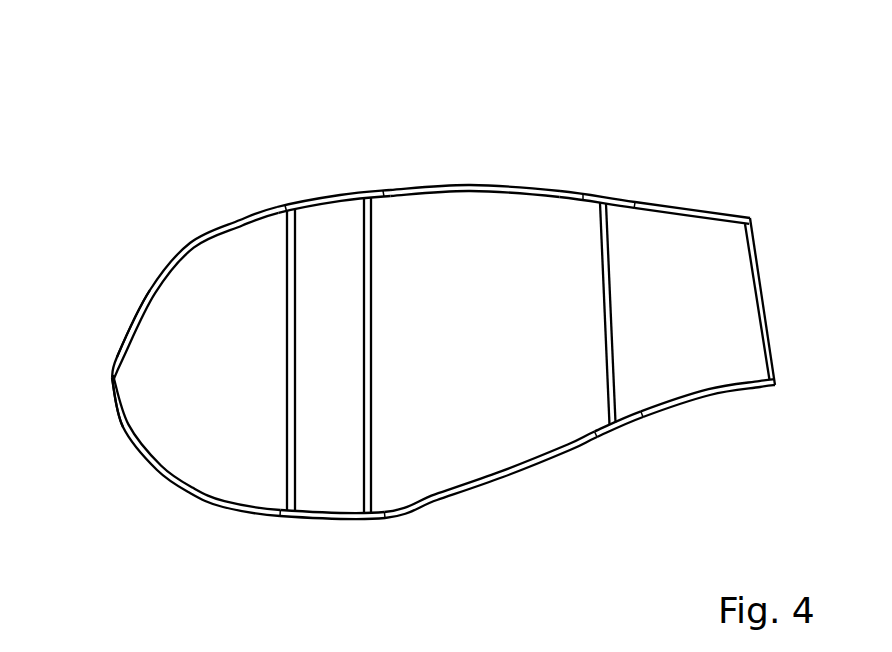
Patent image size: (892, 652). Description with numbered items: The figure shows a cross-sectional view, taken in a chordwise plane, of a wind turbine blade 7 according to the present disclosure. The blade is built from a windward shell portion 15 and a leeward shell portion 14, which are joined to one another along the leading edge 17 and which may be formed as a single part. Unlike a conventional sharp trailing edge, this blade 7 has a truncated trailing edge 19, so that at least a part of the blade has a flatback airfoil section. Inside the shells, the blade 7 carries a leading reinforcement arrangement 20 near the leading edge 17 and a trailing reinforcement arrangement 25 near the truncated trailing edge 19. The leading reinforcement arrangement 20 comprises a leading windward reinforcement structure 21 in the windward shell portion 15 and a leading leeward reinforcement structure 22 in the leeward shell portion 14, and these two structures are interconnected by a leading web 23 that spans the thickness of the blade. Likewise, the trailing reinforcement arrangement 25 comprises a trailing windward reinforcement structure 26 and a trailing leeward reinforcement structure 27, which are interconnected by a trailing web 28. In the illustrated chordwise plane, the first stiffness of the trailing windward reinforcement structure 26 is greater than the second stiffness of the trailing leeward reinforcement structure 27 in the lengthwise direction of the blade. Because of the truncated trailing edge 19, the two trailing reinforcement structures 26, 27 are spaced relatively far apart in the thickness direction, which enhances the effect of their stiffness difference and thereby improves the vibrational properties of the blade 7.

The wind turbine blade 7 is at (154, 220).
The leeward shell portion 14 is at (470, 188).
The windward shell portion 15 is at (517, 480).
The leading edge 17 is at (112, 378).
The truncated trailing edge 19 is at (763, 277).
The leading reinforcement arrangement 20 is at (270, 159).
The leading windward reinforcement structure 21 is at (335, 522).
The leading leeward reinforcement structure 22 is at (323, 195).
The leading web 23 is at (295, 365).
The trailing reinforcement arrangement 25 is at (663, 160).
The trailing windward reinforcement structure 26 is at (623, 428).
The trailing leeward reinforcement structure 27 is at (604, 200).
The trailing web 28 is at (615, 305).